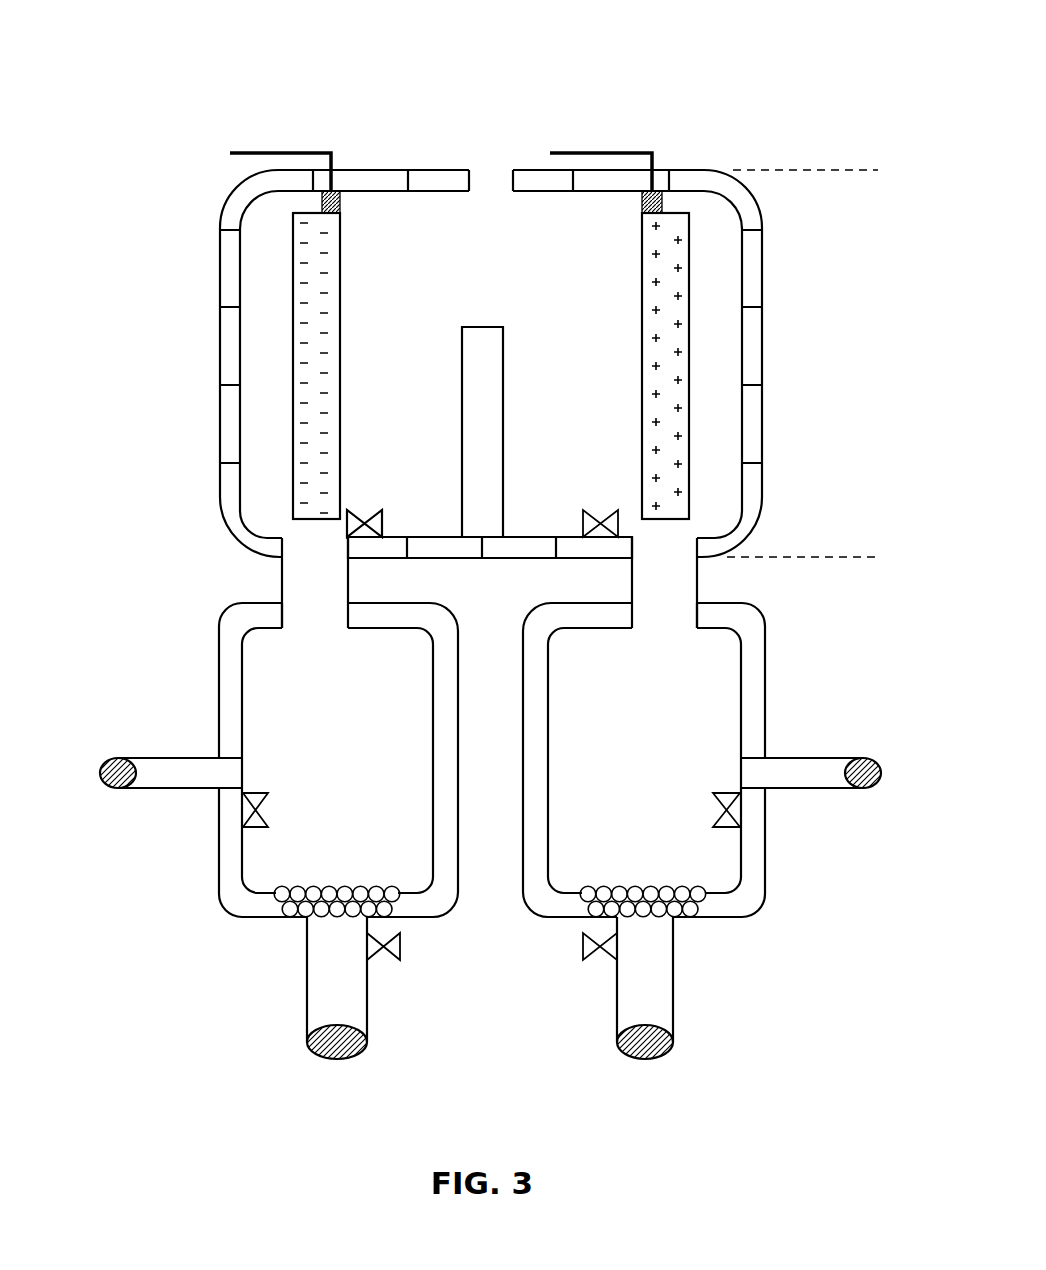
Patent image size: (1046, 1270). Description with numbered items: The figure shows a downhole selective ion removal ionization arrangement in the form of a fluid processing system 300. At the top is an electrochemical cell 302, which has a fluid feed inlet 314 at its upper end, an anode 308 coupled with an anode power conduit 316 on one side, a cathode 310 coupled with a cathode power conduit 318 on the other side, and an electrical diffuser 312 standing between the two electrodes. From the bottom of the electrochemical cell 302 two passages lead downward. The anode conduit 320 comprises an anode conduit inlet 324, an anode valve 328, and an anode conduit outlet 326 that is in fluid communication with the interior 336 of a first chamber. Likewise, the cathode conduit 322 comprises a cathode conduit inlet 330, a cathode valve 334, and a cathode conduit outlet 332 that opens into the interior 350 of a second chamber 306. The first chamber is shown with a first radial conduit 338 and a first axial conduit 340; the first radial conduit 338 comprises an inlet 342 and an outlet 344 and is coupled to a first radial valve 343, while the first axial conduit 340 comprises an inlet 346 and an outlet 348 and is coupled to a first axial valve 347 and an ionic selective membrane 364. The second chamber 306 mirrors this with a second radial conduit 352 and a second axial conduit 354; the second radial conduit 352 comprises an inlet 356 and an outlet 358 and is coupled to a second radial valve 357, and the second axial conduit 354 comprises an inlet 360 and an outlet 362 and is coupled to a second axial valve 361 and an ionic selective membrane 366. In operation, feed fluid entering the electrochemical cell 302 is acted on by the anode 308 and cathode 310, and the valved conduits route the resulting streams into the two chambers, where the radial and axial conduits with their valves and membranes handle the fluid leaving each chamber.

The fluid processing system 300 is at (195, 38).
The electrochemical cell 302 is at (878, 170).
The second chamber 306 is at (765, 638).
The anode 308 is at (293, 237).
The cathode 310 is at (689, 237).
The electrical diffuser 312 is at (503, 425).
The fluid feed inlet 314 is at (492, 170).
The anode power conduit 316 is at (276, 151).
The cathode power conduit 318 is at (614, 151).
The anode conduit 320 is at (282, 587).
The cathode conduit 322 is at (697, 567).
The anode conduit inlet 324 is at (305, 547).
The anode conduit outlet 326 is at (305, 613).
The anode valve 328 is at (378, 511).
The cathode conduit inlet 330 is at (678, 547).
The cathode conduit outlet 332 is at (675, 613).
The cathode valve 334 is at (587, 511).
The interior of first chamber 336 is at (433, 673).
The first radial conduit 338 is at (146, 757).
The first axial conduit 340 is at (307, 993).
The inlet 342 is at (232, 777).
The first radial valve 343 is at (268, 803).
The outlet 344 is at (100, 781).
The inlet 346 is at (313, 886).
The first axial valve 347 is at (400, 955).
The outlet 348 is at (331, 1059).
The interior of second chamber 350 is at (548, 673).
The second radial conduit 352 is at (834, 757).
The second axial conduit 354 is at (673, 993).
The inlet 356 is at (748, 777).
The second radial valve 357 is at (713, 803).
The outlet 358 is at (880, 781).
The inlet 360 is at (590, 886).
The second axial valve 361 is at (583, 955).
The outlet 362 is at (655, 1059).
The ionic selective membrane 364 is at (345, 904).
The ionic selective membrane 366 is at (660, 904).